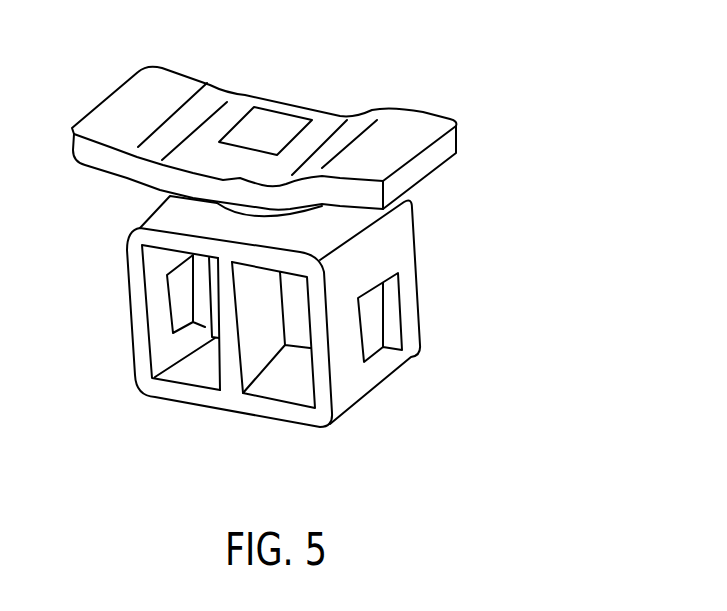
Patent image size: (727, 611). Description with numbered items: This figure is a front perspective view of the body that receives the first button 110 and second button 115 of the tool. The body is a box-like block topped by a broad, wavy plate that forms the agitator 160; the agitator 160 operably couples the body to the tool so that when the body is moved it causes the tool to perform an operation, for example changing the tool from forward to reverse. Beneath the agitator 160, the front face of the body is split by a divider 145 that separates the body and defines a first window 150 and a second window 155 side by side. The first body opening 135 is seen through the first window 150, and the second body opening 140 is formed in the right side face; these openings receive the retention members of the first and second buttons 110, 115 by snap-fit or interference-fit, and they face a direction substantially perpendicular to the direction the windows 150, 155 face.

The first button 110 is at (299, 249).
The second button 115 is at (490, 90).
The first body opening 135 is at (178, 305).
The second body opening 140 is at (378, 318).
The divider 145 is at (230, 368).
The first window 150 is at (180, 375).
The second window 155 is at (275, 345).
The agitator 160 is at (323, 158).